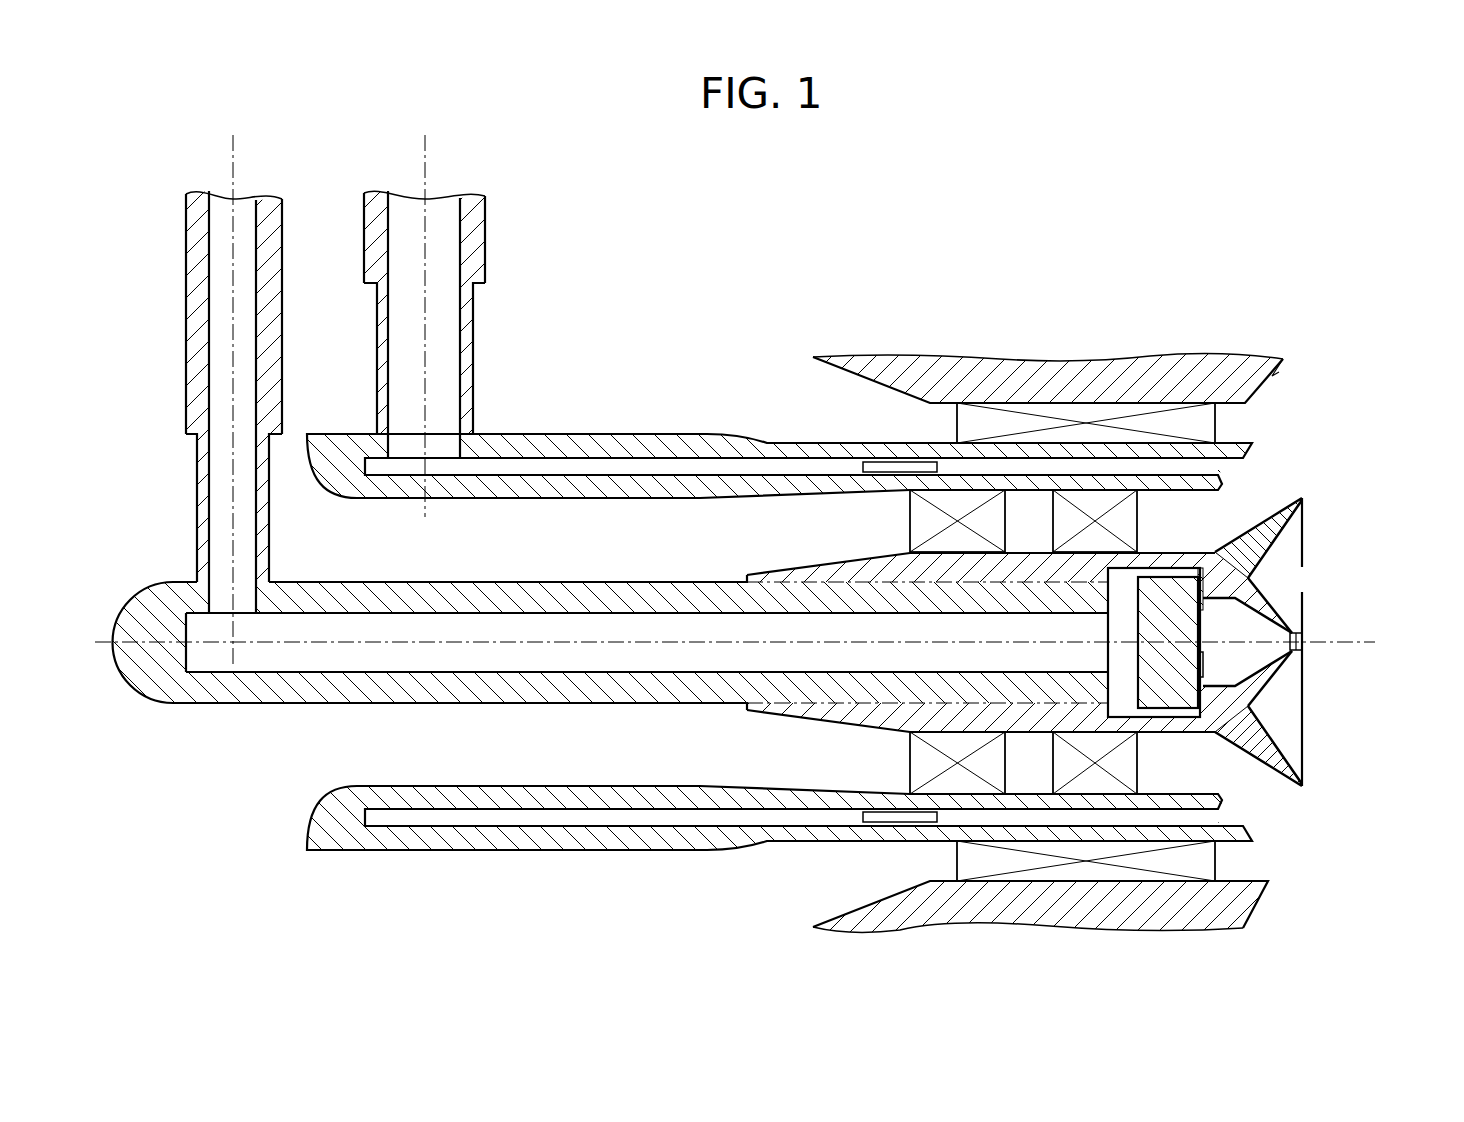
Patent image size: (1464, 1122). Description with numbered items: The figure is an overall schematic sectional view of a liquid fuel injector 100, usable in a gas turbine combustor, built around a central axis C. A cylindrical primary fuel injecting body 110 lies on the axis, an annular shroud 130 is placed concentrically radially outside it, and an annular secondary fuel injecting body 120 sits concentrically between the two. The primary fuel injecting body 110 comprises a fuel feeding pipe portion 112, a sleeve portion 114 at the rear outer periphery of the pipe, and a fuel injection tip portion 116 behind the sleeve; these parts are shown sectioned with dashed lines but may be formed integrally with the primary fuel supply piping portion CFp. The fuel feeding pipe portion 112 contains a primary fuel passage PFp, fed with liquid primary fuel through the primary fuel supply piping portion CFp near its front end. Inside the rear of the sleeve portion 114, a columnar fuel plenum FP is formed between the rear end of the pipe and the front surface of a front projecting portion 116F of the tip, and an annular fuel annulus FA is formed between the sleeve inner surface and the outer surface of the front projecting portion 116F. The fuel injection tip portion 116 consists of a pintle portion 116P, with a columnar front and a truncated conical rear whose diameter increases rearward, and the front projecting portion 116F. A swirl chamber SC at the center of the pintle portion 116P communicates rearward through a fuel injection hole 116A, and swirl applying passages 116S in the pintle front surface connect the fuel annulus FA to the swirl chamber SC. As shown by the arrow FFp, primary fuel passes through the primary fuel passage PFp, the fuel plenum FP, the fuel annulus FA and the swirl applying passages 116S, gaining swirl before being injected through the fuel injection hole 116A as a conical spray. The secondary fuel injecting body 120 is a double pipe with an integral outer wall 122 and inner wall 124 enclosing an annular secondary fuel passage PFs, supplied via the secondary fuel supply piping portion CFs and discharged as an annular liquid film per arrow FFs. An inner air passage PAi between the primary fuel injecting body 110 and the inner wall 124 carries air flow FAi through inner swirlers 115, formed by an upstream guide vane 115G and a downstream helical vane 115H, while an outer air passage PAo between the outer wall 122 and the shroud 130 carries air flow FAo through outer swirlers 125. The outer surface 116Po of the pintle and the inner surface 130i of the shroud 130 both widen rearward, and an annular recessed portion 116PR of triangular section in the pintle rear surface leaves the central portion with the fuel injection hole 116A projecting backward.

The liquid fuel injector 100 is at (1258, 256).
The primary fuel injecting body 110 is at (785, 694).
The fuel feeding pipe portion 112 is at (265, 701).
The sleeve portion 114 is at (1003, 713).
The inner swirlers 115 is at (1090, 255).
The guide vane 115G is at (953, 500).
The helical vane 115H is at (1098, 500).
The fuel injection tip portion 116 is at (1388, 745).
The fuel injection hole 116A is at (1305, 639).
The front projecting portion 116F is at (1172, 695).
The pintle portion 116P is at (1278, 755).
The recessed portion 116PR is at (1330, 590).
The outer surface 116Po is at (1268, 515).
The swirl applying passages 116S is at (1290, 611).
The secondary fuel injecting body 120 is at (668, 345).
The outer wall 122 is at (568, 435).
The inner wall 124 is at (641, 485).
The outer swirlers 125 is at (1148, 423).
The shroud 130 is at (868, 362).
The inner surface 130i is at (1283, 378).
The central axis C is at (1391, 643).
The primary fuel supply piping portion CFp is at (198, 290).
The secondary fuel supply piping portion CFs is at (377, 245).
The primary fuel flow FFp is at (230, 403).
The secondary fuel flow FFs is at (418, 403).
The outer air flow FAo is at (808, 404).
The inner air flow FAi is at (808, 533).
The outer air passage PAo is at (877, 428).
The inner air passage PAi is at (873, 541).
The primary fuel passage PFp is at (712, 661).
The secondary fuel passage PFs is at (710, 484).
The fuel annulus FA is at (1196, 570).
The fuel plenum FP is at (1135, 655).
The swirl chamber SC is at (1254, 662).